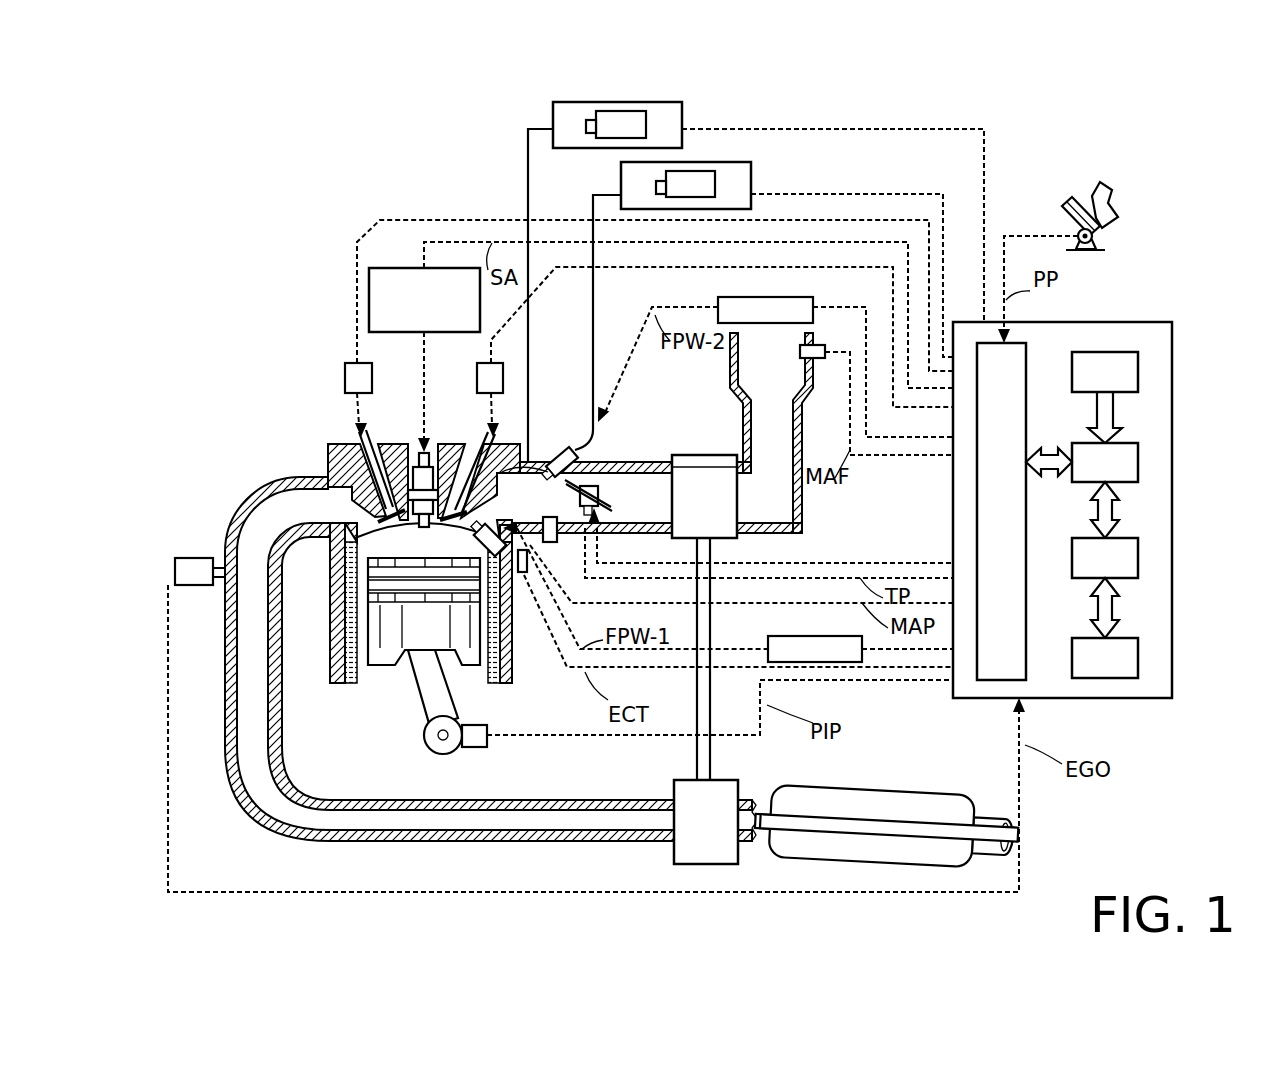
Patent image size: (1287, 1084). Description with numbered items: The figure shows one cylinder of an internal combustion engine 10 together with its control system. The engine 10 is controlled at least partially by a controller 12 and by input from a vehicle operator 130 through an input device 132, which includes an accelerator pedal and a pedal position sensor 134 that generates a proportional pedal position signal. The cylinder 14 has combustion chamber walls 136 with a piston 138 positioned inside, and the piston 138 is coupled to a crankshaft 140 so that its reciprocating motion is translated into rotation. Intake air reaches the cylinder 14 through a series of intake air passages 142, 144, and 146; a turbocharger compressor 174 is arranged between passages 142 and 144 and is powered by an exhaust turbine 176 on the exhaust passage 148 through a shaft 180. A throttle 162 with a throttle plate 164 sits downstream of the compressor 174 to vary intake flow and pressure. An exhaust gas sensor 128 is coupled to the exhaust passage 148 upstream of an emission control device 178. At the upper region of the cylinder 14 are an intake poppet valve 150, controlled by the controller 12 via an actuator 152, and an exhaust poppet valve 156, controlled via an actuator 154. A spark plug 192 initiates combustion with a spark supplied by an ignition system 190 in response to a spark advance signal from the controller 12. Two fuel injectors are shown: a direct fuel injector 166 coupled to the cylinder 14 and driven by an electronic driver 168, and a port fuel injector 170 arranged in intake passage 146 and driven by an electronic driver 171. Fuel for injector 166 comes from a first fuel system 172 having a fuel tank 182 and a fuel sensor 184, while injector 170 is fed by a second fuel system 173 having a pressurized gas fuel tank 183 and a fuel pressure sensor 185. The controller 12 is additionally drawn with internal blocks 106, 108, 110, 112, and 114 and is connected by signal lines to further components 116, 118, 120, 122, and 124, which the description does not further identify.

The internal combustion engine 10 is at (256, 398).
The controller 12 is at (1166, 323).
The cylinder (combustion chamber) 14 is at (410, 538).
The microprocessor unit (CPU) 106 is at (1140, 458).
The input/output ports 108 is at (1028, 350).
The read only memory (ROM) 110 is at (1140, 372).
The random access memory (RAM) 112 is at (1140, 562).
The keep alive memory (KAM) 114 is at (1140, 660).
The engine coolant temperature sensor 116 is at (524, 575).
The Hall effect sensor 118 is at (505, 665).
The crankshaft sensor 120 is at (480, 748).
The mass air flow sensor 122 is at (812, 345).
The manifold absolute pressure sensor 124 is at (552, 545).
The exhaust gas sensor 128 is at (175, 566).
The vehicle operator 130 is at (1112, 200).
The input device 132 is at (1064, 216).
The pedal position sensor 134 is at (1102, 240).
The combustion chamber walls 136 is at (354, 682).
The piston 138 is at (405, 645).
The crankshaft 140 is at (436, 752).
The intake air passage 142 is at (800, 377).
The intake air passage 144 is at (667, 509).
The intake air passage 146 is at (573, 509).
The exhaust passage 148 is at (322, 519).
The intake poppet valve 150 is at (431, 490).
The actuator 152 is at (477, 378).
The actuator 154 is at (345, 380).
The exhaust poppet valve 156 is at (385, 512).
The throttle 162 is at (600, 482).
The throttle plate 164 is at (548, 472).
The fuel injector 166 is at (484, 530).
The electronic driver 168 is at (768, 640).
The fuel injector 170 is at (568, 452).
The electronic driver 171 is at (718, 300).
The first fuel system 172 is at (640, 102).
The second fuel system 173 is at (725, 166).
The compressor 174 is at (686, 455).
The exhaust turbine 176 is at (676, 852).
The emission control device 178 is at (935, 797).
The shaft 180 is at (712, 742).
The fuel tank 182 is at (626, 111).
The pressurized gas fuel tank 183 is at (696, 171).
The fuel sensor 184 is at (586, 123).
The fuel pressure sensor 185 is at (656, 185).
The ignition system 190 is at (395, 268).
The spark plug 192 is at (418, 465).